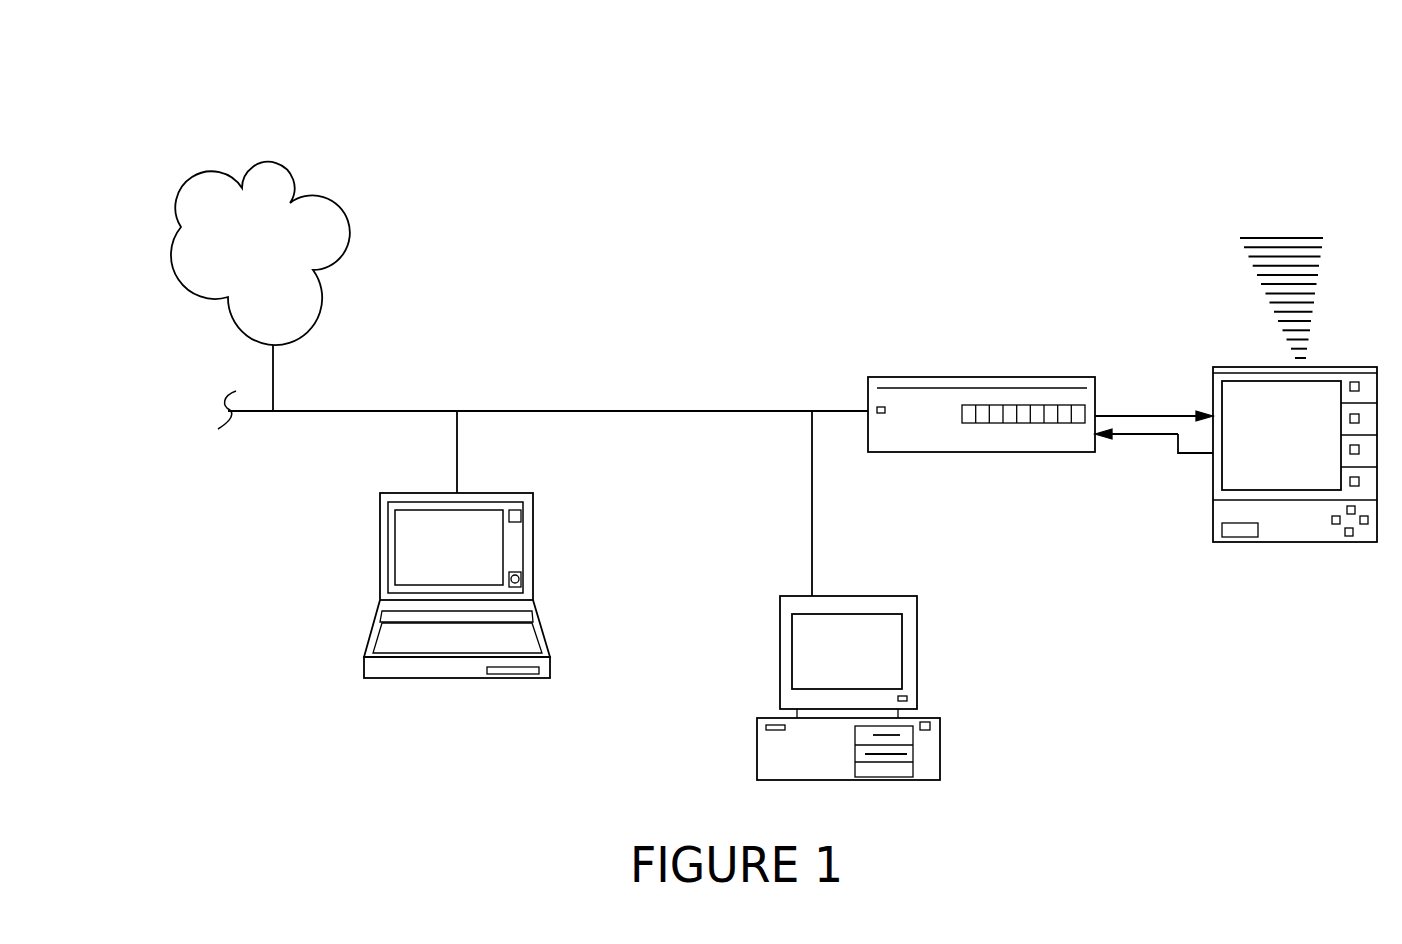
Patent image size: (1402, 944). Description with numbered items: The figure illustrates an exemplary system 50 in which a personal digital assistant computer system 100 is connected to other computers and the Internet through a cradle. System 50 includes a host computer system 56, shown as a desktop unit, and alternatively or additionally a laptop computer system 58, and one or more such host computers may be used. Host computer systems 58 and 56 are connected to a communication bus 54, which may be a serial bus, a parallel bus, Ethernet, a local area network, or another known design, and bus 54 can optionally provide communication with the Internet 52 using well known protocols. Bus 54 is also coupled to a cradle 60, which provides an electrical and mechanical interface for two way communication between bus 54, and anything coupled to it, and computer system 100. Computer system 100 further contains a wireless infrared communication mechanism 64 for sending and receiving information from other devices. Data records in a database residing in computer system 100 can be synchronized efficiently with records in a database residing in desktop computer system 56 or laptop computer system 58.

The system 50 is at (141, 54).
The Internet 52 is at (340, 204).
The communication bus 54 is at (567, 411).
The host computer system 56 is at (918, 625).
The laptop computer system 58 is at (502, 493).
The cradle 60 is at (1013, 377).
The wireless infrared communication mechanism 64 is at (1242, 280).
The personal digital assistant computer system 100 is at (1340, 367).